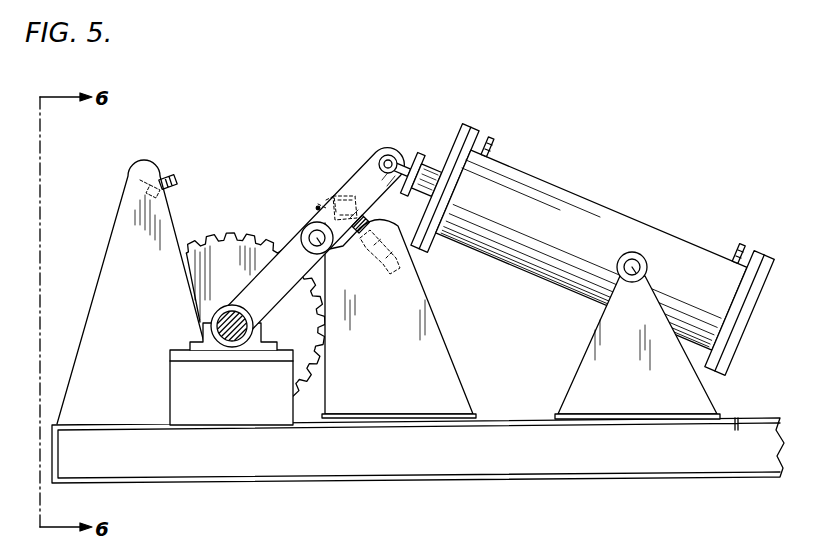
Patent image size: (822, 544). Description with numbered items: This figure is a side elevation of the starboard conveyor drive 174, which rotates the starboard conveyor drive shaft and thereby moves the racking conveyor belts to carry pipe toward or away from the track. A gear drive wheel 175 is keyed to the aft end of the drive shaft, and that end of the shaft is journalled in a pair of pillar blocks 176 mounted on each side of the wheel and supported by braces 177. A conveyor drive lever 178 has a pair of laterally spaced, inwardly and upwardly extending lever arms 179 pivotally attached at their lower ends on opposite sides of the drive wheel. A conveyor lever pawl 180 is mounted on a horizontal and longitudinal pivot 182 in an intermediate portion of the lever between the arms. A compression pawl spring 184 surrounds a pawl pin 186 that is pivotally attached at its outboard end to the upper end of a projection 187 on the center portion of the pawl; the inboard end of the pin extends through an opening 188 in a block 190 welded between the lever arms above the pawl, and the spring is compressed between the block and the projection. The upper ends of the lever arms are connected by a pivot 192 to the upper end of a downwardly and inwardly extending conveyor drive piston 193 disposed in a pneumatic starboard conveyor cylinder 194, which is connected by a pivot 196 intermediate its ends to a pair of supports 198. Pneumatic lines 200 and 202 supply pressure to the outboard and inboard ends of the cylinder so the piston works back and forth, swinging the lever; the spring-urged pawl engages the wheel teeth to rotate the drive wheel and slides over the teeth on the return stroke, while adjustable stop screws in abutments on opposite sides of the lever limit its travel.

The starboard conveyor drive 174 is at (580, 227).
The gear drive wheel 175 is at (221, 255).
The pillar blocks 176 is at (207, 325).
The braces 177 is at (243, 406).
The conveyor drive lever 178 is at (284, 294).
The lever arms 179 is at (268, 306).
The conveyor lever pawl 180 is at (294, 231).
The pivot 182 is at (346, 256).
The compression pawl spring 184 is at (321, 205).
The pawl pin 186 is at (353, 202).
The projection 187 is at (318, 208).
The opening 188 is at (366, 209).
The block 190 is at (322, 205).
The pivot 192 is at (388, 155).
The conveyor drive piston 193 is at (410, 152).
The starboard conveyor cylinder 194 is at (561, 231).
The pivot 196 is at (634, 283).
The supports 198 is at (639, 390).
The pneumatic line 200 is at (495, 137).
The pneumatic line 202 is at (740, 248).